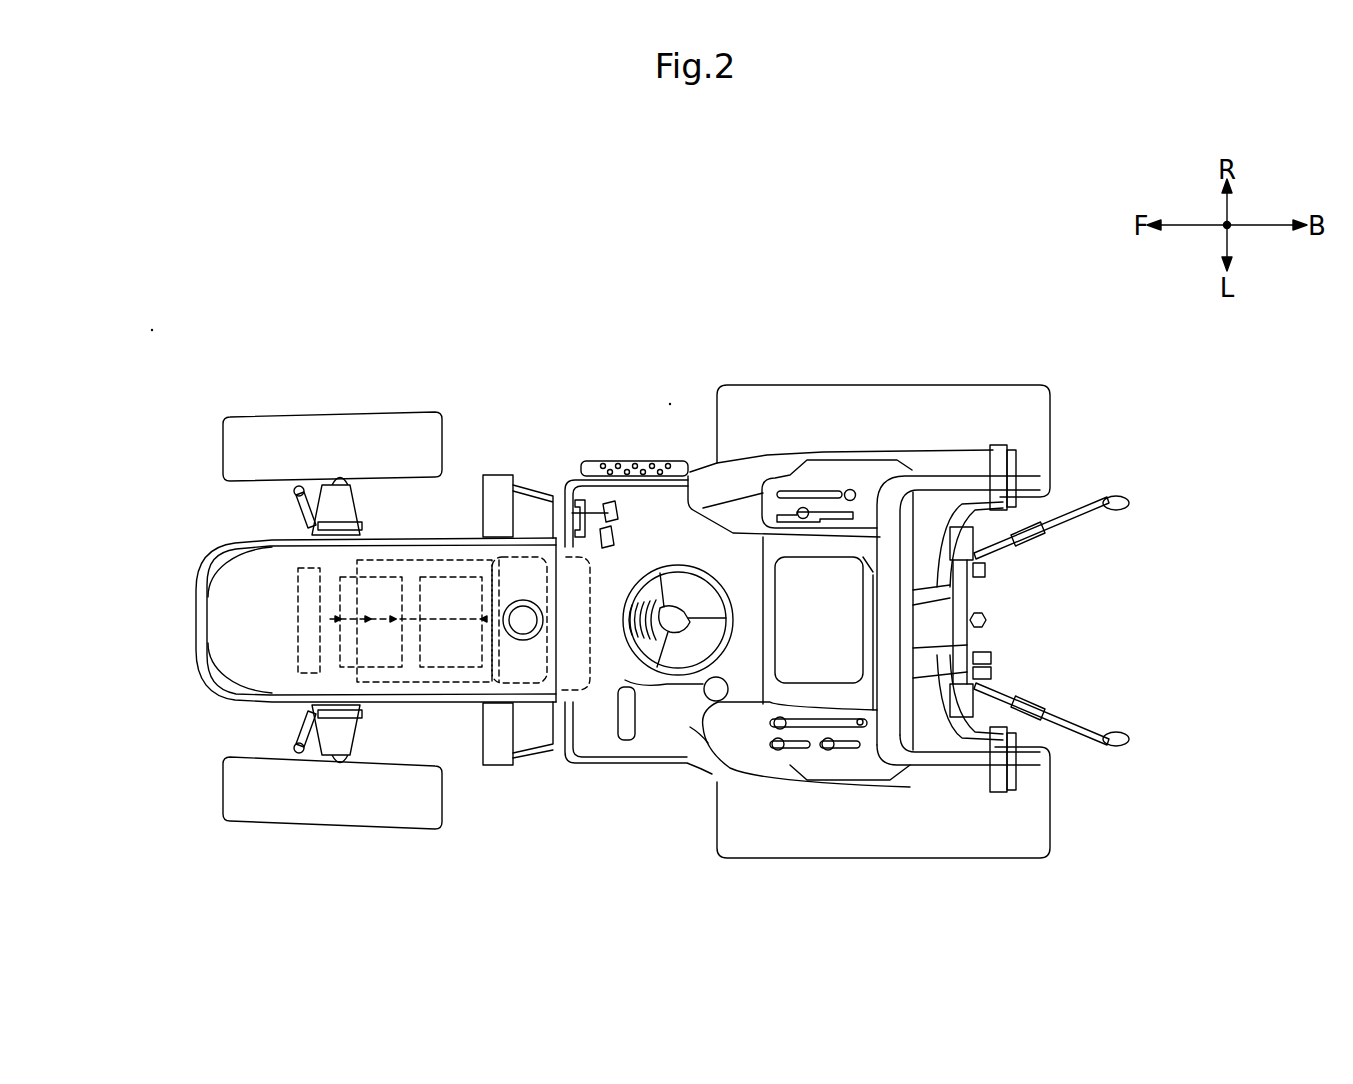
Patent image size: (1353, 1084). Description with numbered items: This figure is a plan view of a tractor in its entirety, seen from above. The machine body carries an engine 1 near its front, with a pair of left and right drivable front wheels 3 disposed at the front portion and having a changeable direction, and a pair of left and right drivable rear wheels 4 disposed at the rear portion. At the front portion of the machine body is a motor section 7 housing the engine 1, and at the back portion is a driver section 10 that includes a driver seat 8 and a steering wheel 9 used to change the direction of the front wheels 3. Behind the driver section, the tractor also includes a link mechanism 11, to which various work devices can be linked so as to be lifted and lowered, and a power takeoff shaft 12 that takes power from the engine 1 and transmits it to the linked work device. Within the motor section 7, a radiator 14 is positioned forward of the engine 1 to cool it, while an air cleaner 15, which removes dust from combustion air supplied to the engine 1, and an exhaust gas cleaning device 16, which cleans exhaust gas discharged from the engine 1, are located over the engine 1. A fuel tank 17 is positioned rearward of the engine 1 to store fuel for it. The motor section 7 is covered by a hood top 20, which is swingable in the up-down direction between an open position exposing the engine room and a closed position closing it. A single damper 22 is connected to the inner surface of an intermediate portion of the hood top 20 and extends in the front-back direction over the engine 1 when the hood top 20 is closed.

The engine 1 is at (458, 684).
The front wheels 3 is at (296, 425).
The rear wheels 4 is at (887, 392).
The motor section 7 is at (160, 543).
The driver seat 8 is at (777, 608).
The steering wheel 9 is at (683, 563).
The driver section 10 is at (673, 714).
The link mechanism 11 is at (1115, 764).
The power takeoff shaft 12 is at (988, 620).
The radiator 14 is at (297, 580).
The air cleaner 15 is at (390, 580).
The exhaust gas cleaning device 16 is at (453, 570).
The fuel tank 17 is at (578, 670).
The hood top 20 is at (252, 649).
The damper 22 is at (353, 620).